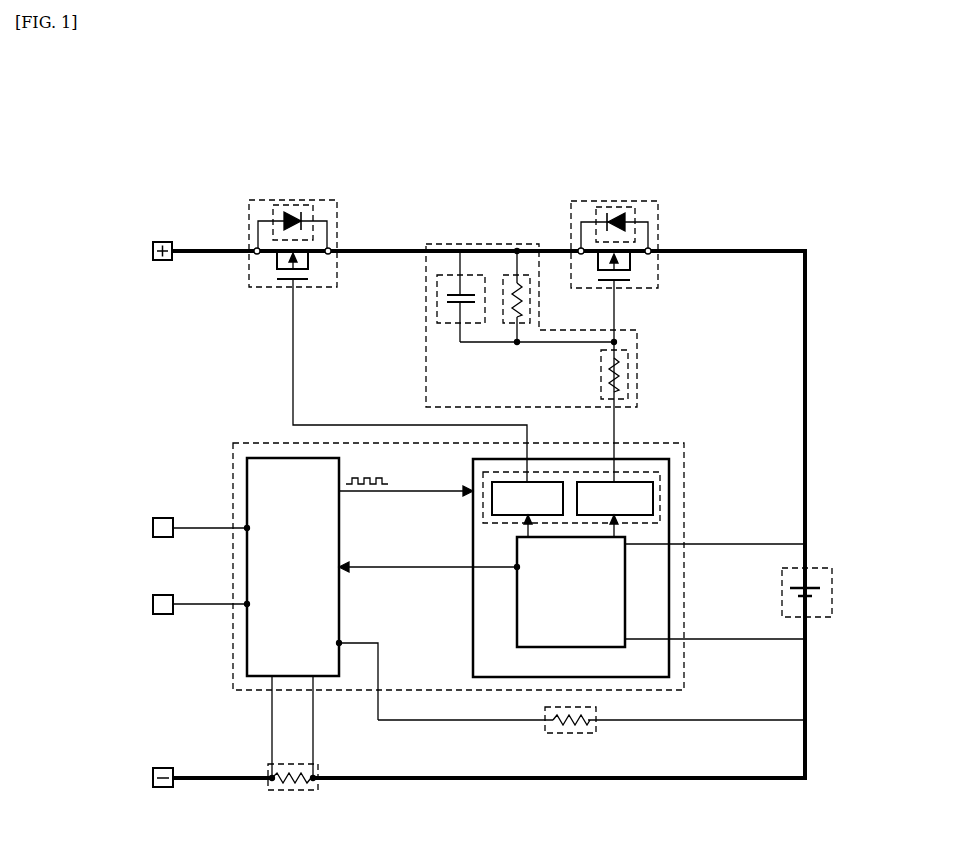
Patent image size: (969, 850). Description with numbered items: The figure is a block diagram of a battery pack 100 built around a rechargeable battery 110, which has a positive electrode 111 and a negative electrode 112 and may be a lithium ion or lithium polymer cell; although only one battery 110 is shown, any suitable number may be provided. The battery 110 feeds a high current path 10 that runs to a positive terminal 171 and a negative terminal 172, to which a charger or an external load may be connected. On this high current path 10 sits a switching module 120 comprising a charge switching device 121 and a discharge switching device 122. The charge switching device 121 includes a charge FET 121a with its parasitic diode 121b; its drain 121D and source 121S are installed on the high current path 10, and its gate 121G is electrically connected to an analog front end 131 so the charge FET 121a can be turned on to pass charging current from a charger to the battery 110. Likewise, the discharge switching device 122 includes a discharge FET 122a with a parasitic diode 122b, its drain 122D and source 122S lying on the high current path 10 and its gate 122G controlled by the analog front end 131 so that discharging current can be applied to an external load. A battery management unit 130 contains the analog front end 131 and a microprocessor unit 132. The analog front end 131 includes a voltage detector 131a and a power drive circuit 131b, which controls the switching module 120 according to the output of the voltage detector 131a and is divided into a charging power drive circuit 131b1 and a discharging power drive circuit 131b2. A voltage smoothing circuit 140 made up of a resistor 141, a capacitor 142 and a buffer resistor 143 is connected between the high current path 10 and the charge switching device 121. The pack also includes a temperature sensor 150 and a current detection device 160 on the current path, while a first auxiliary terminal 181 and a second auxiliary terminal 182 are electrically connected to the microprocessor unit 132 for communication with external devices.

The high current path 10 is at (751, 250).
The battery pack 100 is at (815, 140).
The battery 110 is at (833, 592).
The positive electrode 111 is at (807, 586).
The negative electrode 112 is at (810, 600).
The switching module 120 is at (580, 157).
The charge switching device 121 is at (575, 201).
The charge FET 121a is at (576, 289).
The parasitic diode 121b is at (616, 207).
The source 121S is at (578, 248).
The drain 121D is at (651, 248).
The gate 121G is at (620, 283).
The discharge switching device 122 is at (328, 200).
The discharge FET 122a is at (333, 288).
The parasitic diode 122b is at (290, 205).
The source 122S is at (331, 248).
The drain 122D is at (254, 248).
The gate 122G is at (286, 282).
The battery management unit 130 is at (696, 436).
The analog front end 131 is at (670, 566).
The voltage detector 131a is at (626, 608).
The power drive circuit 131b is at (661, 493).
The charging power drive circuit 131b1 is at (654, 510).
The discharging power drive circuit 131b2 is at (491, 510).
The microprocessor unit 132 is at (259, 458).
The voltage smoothing circuit 140 is at (645, 368).
The resistor 141 is at (601, 384).
The capacitor 142 is at (472, 324).
The buffer resistor 143 is at (526, 324).
The temperature sensor 150 is at (570, 737).
The current detection device 160 is at (292, 793).
The positive terminal 171 is at (152, 249).
The negative terminal 172 is at (152, 776).
The first auxiliary terminal 181 is at (152, 526).
The second auxiliary terminal 182 is at (152, 602).